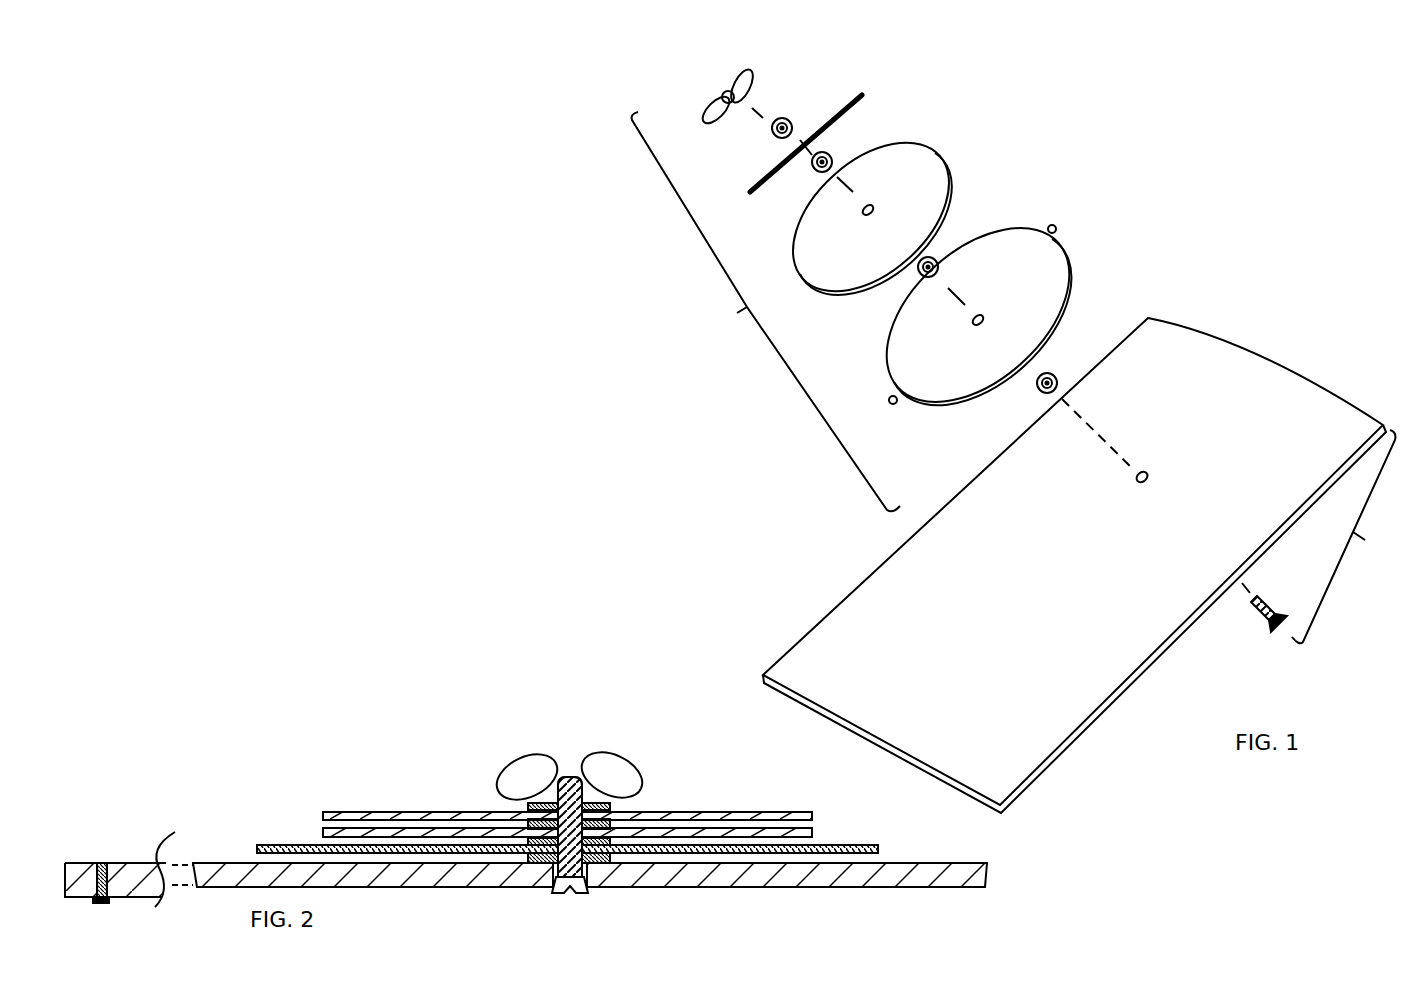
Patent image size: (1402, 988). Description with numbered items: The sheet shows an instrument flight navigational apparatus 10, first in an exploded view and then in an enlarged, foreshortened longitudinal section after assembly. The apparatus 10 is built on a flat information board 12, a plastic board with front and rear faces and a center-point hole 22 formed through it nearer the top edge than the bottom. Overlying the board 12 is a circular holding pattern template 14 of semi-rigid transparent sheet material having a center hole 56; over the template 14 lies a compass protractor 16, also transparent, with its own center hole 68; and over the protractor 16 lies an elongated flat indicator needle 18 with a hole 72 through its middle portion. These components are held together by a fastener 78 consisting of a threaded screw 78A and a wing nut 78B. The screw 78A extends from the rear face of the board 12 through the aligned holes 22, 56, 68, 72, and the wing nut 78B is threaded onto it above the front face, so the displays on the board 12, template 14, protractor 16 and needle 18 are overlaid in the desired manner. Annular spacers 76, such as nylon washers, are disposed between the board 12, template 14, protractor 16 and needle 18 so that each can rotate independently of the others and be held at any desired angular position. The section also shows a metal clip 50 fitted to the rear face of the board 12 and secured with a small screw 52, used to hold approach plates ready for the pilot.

In FIG. 1, the instrument flight navigational apparatus 10 is at (1207, 181).
In FIG. 1, the flat information board 12 is at (1250, 344).
In FIG. 2, the flat information board 12 is at (992, 864).
In FIG. 1, the circular holding pattern template 14 is at (1050, 221).
In FIG. 2, the circular holding pattern template 14 is at (286, 842).
In FIG. 1, the compass protractor 16 is at (952, 148).
In FIG. 2, the compass protractor 16 is at (819, 829).
In FIG. 1, the elongated indicator needle 18 is at (864, 126).
In FIG. 2, the elongated indicator needle 18 is at (773, 807).
In FIG. 1, the hole 22 is at (1136, 483).
In FIG. 2, the hole 22 is at (584, 872).
In FIG. 2, the metal clip 50 is at (133, 858).
In FIG. 2, the small screw 52 is at (100, 864).
In FIG. 1, the hole 56 is at (984, 314).
In FIG. 1, the hole 68 is at (874, 207).
In FIG. 1, the hole 72 is at (803, 137).
In FIG. 1, the annular spacers 76 is at (771, 131).
In FIG. 2, the annular spacers 76 is at (526, 858).
In FIG. 2, the fastener 78 is at (604, 785).
In FIG. 1, the threaded screw 78A is at (1266, 625).
In FIG. 2, the threaded screw 78A is at (571, 777).
In FIG. 1, the wing nut 78B is at (749, 82).
In FIG. 2, the wing nut 78B is at (524, 764).